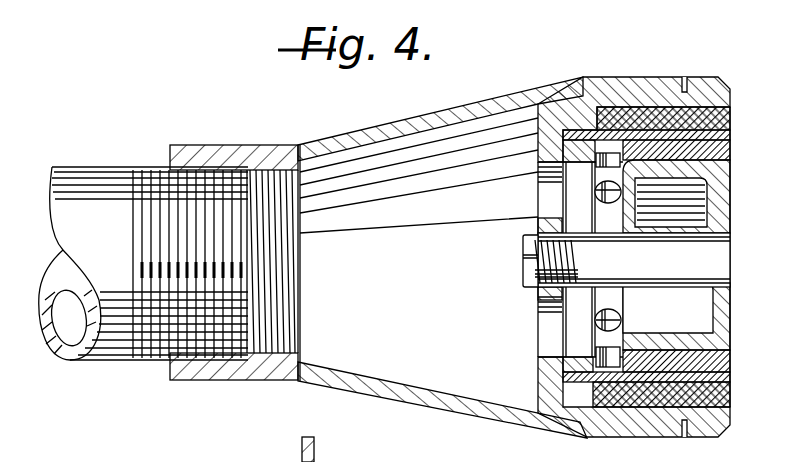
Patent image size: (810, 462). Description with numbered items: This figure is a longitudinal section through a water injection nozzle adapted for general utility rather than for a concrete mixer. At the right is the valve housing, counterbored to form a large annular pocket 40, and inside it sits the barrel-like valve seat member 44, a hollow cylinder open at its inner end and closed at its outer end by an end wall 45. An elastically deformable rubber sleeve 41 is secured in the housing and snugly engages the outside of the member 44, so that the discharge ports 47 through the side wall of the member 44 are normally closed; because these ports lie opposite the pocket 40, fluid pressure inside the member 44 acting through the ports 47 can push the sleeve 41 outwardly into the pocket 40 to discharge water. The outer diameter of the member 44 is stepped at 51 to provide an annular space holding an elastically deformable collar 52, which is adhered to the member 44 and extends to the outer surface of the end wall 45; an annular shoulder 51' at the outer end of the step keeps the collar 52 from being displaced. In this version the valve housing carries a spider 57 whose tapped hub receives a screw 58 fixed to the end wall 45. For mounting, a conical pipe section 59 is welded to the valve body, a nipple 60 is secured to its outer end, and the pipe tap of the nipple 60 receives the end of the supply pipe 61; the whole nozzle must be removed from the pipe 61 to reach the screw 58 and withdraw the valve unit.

The annular pocket 40 is at (728, 92).
The elastically deformable sleeve 41 is at (733, 126).
The barrel-like valve seat member 44 is at (739, 195).
The end wall 45 is at (728, 310).
The discharge ports 47 is at (598, 313).
The step 51 is at (694, 355).
The annular shoulder 51' is at (698, 245).
The elastically deformable collar 52 is at (731, 150).
The spider 57 is at (540, 378).
The screw 58 is at (665, 247).
The conical pipe section 59 is at (425, 115).
The nipple 60 is at (232, 145).
The supply pipe 61 is at (96, 165).